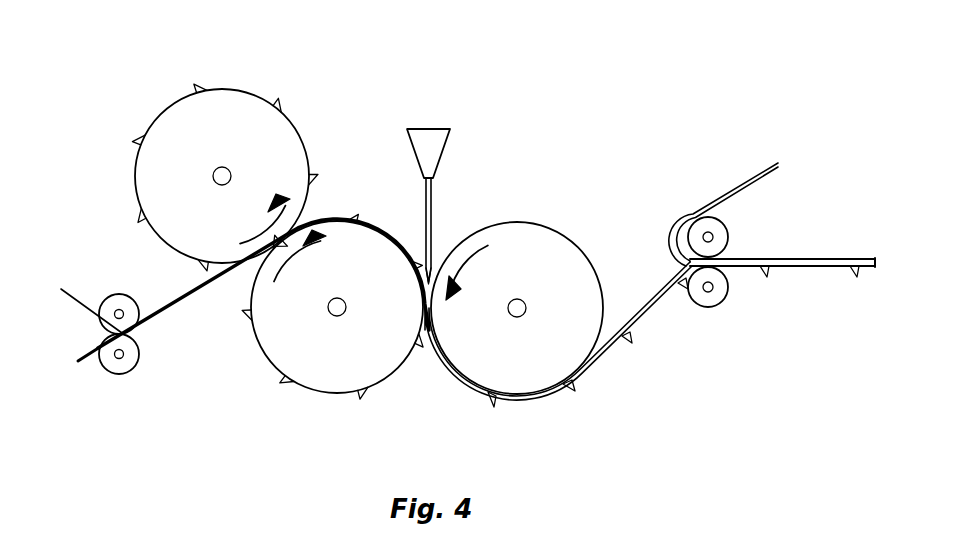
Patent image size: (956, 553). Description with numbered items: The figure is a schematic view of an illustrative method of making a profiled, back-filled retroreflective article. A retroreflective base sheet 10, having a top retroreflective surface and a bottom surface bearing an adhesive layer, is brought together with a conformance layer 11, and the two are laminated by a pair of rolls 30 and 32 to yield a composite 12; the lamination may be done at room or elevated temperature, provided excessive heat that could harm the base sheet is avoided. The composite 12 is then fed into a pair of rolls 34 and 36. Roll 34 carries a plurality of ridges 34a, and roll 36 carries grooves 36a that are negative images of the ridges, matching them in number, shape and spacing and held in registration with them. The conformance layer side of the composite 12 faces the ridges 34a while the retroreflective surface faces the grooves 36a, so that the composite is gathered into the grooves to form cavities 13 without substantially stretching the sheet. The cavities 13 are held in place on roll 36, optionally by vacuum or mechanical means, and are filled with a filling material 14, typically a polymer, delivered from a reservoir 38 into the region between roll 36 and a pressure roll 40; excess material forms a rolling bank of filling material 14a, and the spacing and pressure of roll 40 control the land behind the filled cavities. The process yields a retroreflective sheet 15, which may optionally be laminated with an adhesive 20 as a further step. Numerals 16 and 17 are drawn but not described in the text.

The retroreflective base sheet 10 is at (80, 358).
The conformance layer 11 is at (61, 289).
The composite 12 is at (177, 308).
The cavities 13 is at (416, 262).
The filling material 14 is at (433, 192).
The rolling bank of filling material 14a is at (441, 258).
The retroreflective sheet 15 is at (527, 398).
The labeled product web 16 is at (852, 274).
The web end 17 is at (872, 272).
The adhesive 20 is at (733, 190).
The roll 30 is at (119, 293).
The roll 32 is at (121, 375).
The roll 34 is at (163, 118).
The ridges 34a is at (277, 101).
The roll 36 is at (263, 350).
The grooves 36a is at (358, 392).
The reservoir 38 is at (433, 128).
The pressure roll 40 is at (534, 222).